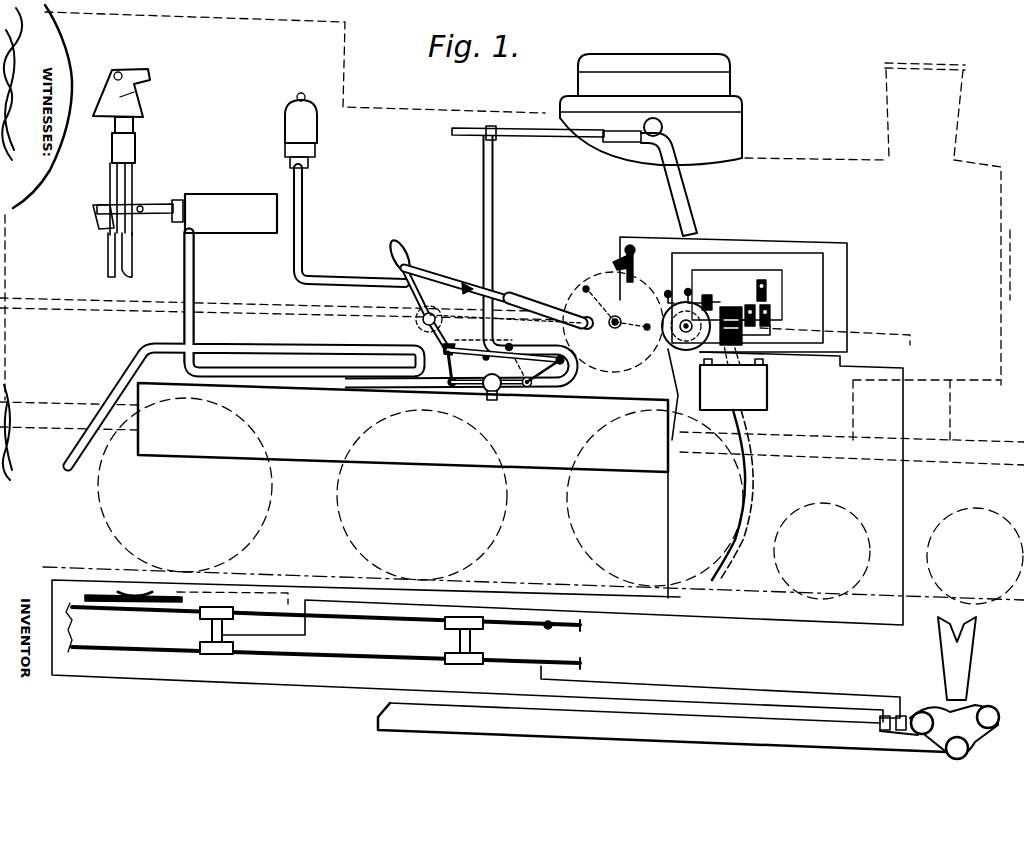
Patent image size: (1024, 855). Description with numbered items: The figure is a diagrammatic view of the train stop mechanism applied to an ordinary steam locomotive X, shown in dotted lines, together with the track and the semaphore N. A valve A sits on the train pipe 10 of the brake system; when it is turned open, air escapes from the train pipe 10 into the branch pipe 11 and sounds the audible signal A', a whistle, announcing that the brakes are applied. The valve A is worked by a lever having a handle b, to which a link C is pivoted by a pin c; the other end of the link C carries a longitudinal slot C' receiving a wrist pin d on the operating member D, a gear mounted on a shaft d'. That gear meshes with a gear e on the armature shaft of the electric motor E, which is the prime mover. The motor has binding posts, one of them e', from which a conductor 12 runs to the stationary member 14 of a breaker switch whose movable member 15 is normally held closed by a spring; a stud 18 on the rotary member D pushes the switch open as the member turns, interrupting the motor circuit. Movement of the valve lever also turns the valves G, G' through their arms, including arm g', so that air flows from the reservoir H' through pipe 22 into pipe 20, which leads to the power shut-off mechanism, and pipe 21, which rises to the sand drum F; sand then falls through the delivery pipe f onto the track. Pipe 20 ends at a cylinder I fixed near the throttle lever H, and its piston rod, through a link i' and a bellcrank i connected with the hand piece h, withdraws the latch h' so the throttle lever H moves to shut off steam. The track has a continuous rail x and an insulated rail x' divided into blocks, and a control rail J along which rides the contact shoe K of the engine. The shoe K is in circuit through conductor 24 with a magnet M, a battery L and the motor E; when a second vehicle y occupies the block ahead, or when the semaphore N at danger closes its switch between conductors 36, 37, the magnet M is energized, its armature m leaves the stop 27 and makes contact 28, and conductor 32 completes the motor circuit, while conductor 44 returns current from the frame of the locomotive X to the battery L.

The train pipe 10 is at (126, 379).
The branch pipe 11 is at (303, 224).
The conductor 12 is at (820, 252).
The stationary member of breaker switch 14 is at (627, 251).
The movable member of breaker switch 15 is at (634, 265).
The stud 18 is at (589, 285).
The pipe 20 is at (380, 380).
The pipe 21 is at (494, 206).
The pipe 22 is at (492, 400).
The conductor 24 is at (290, 582).
The stop 27 is at (768, 286).
The contact 28 is at (771, 312).
The conductor 32 is at (760, 240).
The conductor 36 is at (735, 692).
The conductor 37 is at (52, 600).
The conductor 44 is at (892, 369).
The throttle lever H is at (124, 173).
The hand piece h is at (132, 255).
The latch h' is at (145, 140).
The bellcrank i is at (93, 235).
The link i' is at (140, 197).
The cylinder I is at (231, 199).
The audible signal A' is at (284, 130).
The sand drum F is at (733, 133).
The delivery pipe f is at (698, 203).
The steam locomotive X is at (803, 163).
The handle b is at (407, 247).
The pin c is at (398, 271).
The link C is at (498, 289).
The longitudinal slot C' is at (506, 298).
The valve A is at (398, 327).
The valve G is at (484, 396).
The valve G' is at (509, 398).
The arm g' is at (564, 377).
The operating member D is at (630, 366).
The wrist pin d is at (602, 336).
The shaft d' is at (618, 324).
The electric motor E is at (685, 371).
The gear e is at (690, 288).
The binding post e' is at (653, 298).
The armature m is at (730, 305).
The magnet M is at (733, 372).
The battery L is at (768, 392).
The reservoir H' is at (403, 490).
The control rail J is at (101, 592).
The contact shoe K is at (122, 590).
The continuous rail x is at (323, 665).
The insulated rail x' is at (384, 632).
The second vehicle y is at (485, 640).
The semaphore N is at (968, 666).